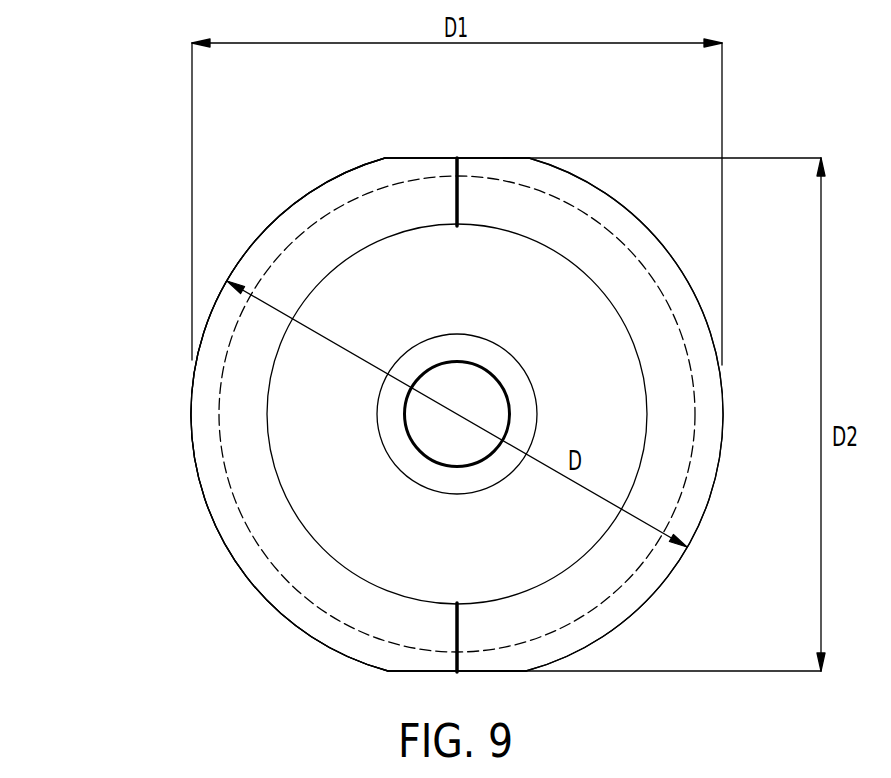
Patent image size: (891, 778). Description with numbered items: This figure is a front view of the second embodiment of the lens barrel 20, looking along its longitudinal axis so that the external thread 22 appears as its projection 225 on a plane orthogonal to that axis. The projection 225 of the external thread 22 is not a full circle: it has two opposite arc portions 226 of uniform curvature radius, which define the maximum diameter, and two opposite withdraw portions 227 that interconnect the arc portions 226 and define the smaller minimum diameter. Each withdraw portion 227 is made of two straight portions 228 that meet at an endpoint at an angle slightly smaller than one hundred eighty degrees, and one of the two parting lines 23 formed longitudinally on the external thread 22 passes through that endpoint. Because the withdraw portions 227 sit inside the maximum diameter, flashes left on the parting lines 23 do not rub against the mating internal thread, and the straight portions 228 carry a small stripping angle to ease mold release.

The lens barrel 20 is at (268, 216).
The external thread 22 is at (200, 478).
The parting line 23 is at (456, 213).
The projection 225 is at (178, 413).
The arc portion 226 is at (194, 385).
The withdraw portion 227 is at (484, 158).
The straight portion 228 is at (422, 158).